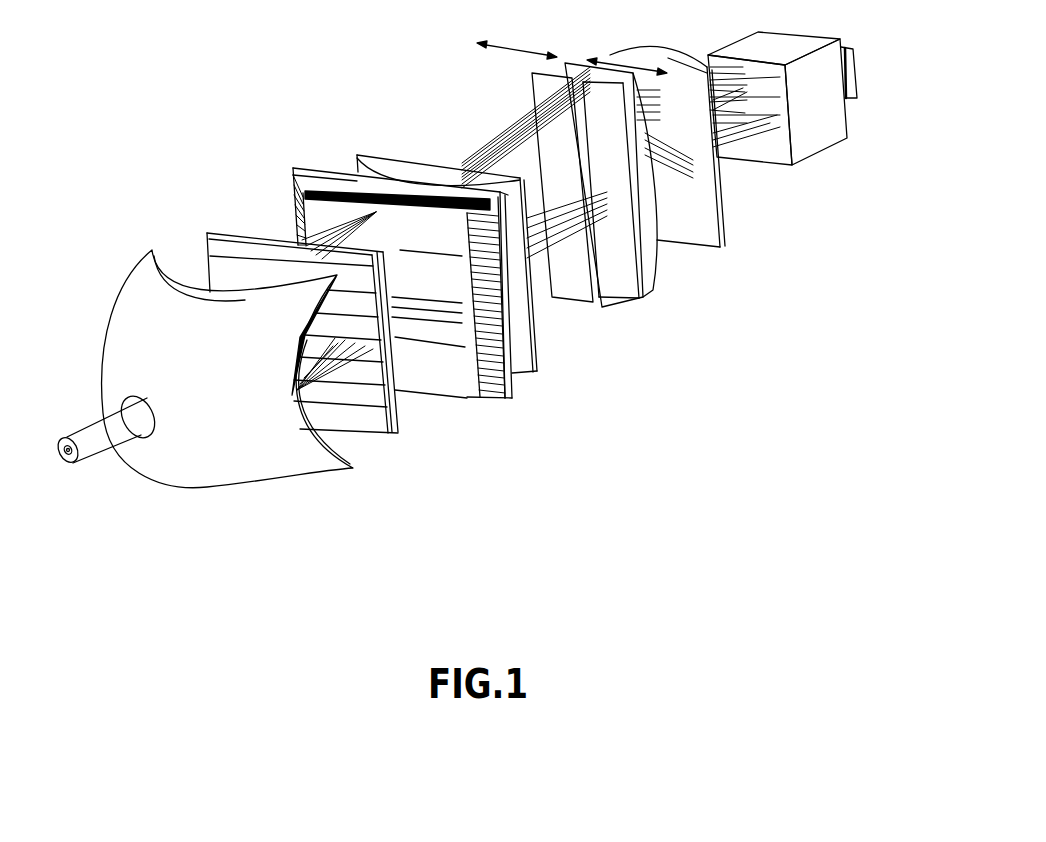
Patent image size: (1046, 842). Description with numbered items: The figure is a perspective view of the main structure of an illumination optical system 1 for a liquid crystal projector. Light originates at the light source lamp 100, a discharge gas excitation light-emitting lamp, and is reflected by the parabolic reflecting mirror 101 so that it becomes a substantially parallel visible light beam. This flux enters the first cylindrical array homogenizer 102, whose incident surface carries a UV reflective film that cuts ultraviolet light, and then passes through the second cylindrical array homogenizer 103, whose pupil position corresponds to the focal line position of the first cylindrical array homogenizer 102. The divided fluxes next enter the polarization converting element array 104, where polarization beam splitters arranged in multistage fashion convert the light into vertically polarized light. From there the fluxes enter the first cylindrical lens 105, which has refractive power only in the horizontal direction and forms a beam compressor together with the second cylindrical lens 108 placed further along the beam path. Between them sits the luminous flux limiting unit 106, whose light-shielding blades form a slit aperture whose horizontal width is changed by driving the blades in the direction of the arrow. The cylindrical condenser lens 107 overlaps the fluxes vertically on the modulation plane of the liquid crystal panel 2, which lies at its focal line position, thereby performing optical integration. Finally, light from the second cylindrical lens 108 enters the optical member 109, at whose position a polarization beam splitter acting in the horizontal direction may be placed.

The illumination optical system 1 is at (595, 478).
The liquid crystal panel 2 is at (847, 47).
The light source lamp 100 is at (95, 442).
The parabolic reflecting mirror 101 is at (227, 475).
The first cylindrical array homogenizer 102 is at (368, 412).
The second cylindrical array homogenizer 103 is at (435, 383).
The polarization converting element array 104 is at (490, 382).
The first cylindrical lens 105 is at (385, 162).
The luminous flux limiting unit 106 is at (612, 138).
The cylindrical condenser lens 107 is at (653, 260).
The second cylindrical lens 108 is at (697, 233).
The optical member 109 is at (769, 155).